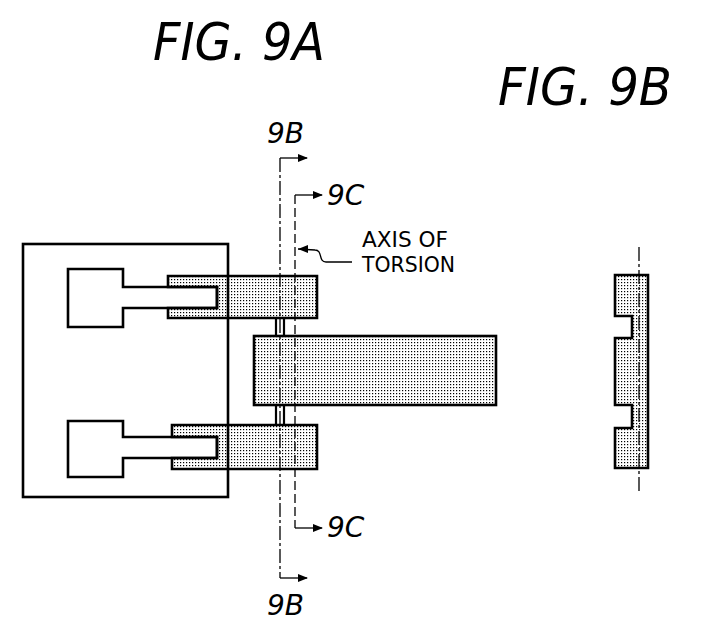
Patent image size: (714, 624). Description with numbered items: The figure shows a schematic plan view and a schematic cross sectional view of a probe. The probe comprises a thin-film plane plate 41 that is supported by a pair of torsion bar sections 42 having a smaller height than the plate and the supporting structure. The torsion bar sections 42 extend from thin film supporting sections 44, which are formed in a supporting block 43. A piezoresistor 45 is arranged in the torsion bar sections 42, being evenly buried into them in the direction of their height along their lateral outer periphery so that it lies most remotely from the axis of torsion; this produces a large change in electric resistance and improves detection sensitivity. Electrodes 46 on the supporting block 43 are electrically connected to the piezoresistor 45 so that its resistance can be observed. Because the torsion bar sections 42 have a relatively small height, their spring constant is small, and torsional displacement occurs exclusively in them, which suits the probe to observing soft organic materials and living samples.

In FIG. 9A, the thin-film plane plate 41 is at (448, 405).
In FIG. 9A, the torsion bar sections 42 is at (304, 330).
In FIG. 9A, the supporting block 43 is at (43, 490).
In FIG. 9A, the thin film supporting sections 44 is at (247, 307).
In FIG. 9B, the piezoresistor 45 is at (622, 390).
In FIG. 9A, the electrodes 46 is at (107, 420).